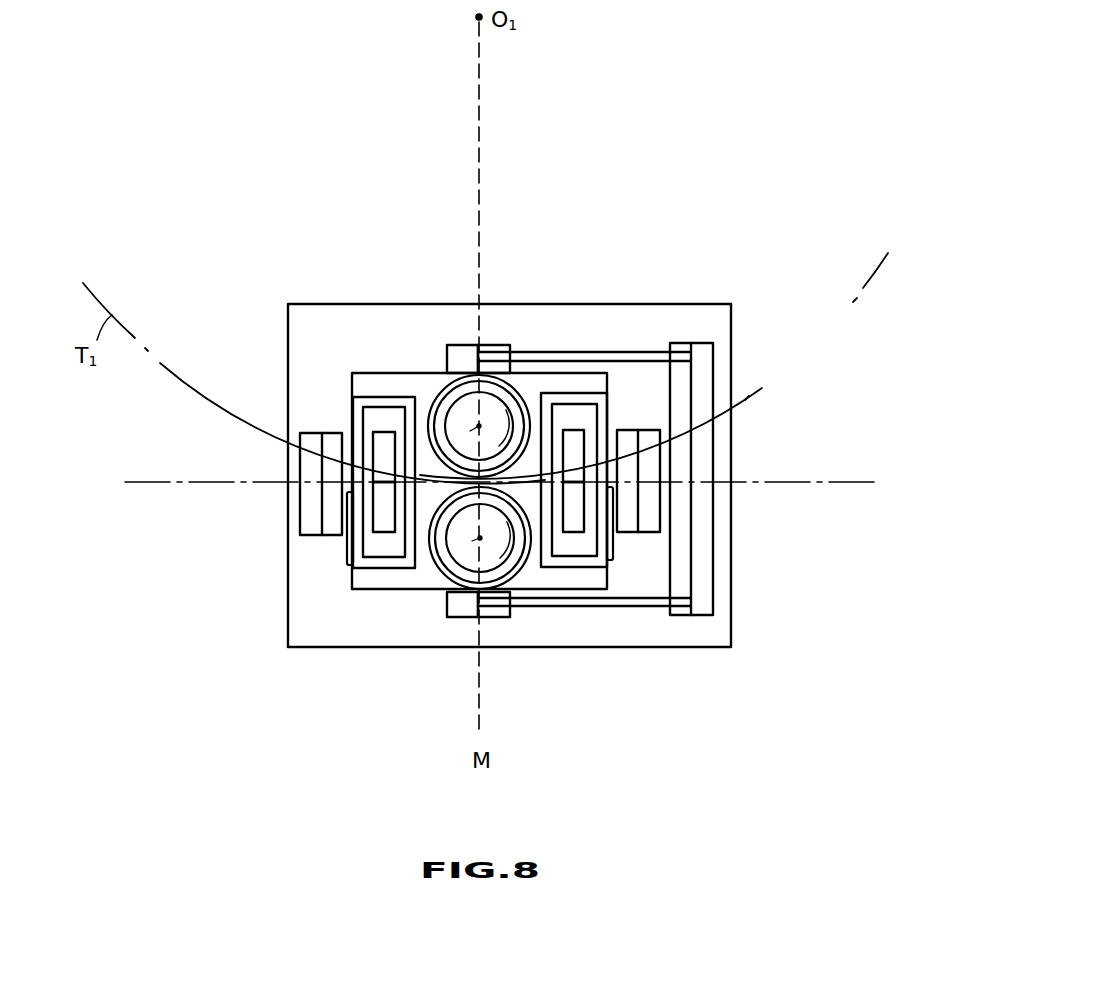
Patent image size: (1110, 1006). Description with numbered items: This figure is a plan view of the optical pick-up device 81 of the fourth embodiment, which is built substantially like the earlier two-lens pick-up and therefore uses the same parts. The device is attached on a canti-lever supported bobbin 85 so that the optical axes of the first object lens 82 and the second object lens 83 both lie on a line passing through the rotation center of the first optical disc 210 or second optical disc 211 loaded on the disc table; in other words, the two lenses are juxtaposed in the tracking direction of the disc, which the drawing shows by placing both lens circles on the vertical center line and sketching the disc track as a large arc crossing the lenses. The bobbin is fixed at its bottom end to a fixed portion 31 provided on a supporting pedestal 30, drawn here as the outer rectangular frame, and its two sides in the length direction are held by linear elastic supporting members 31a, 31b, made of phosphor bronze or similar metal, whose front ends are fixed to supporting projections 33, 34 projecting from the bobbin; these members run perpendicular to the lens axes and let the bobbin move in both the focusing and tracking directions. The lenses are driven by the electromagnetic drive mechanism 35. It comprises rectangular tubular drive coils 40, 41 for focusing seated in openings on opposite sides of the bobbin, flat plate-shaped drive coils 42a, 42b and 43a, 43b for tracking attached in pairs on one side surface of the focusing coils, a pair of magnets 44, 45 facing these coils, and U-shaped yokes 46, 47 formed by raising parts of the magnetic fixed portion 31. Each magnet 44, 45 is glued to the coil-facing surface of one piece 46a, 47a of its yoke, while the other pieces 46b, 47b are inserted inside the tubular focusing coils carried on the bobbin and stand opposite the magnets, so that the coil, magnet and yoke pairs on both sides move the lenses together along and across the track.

The supporting pedestal 30 is at (723, 635).
The fixed portion 31 is at (700, 567).
The elastic supporting member 31a is at (582, 355).
The elastic supporting member 31b is at (551, 606).
The supporting projection 33 is at (462, 357).
The supporting projection 34 is at (456, 617).
The electromagnetic drive mechanism 35 is at (306, 556).
The drive coil for focusing 40 is at (598, 418).
The drive coil for focusing 41 is at (355, 420).
The drive coil for tracking 42a is at (613, 433).
The drive coil for tracking 42b is at (610, 548).
The drive coil for tracking 43a is at (355, 395).
The drive coil for tracking 43b is at (345, 550).
The magnet 44 is at (625, 498).
The magnet 45 is at (330, 520).
The yoke 46 is at (652, 527).
The one piece of yoke 46a is at (650, 466).
The other piece of yoke 46b is at (573, 532).
The yoke 47 is at (347, 503).
The one piece of yoke 47a is at (382, 473).
The other piece of yoke 47b is at (380, 532).
The optical pick-up device 81 is at (790, 258).
The first object lens 82 is at (453, 398).
The second object lens 83 is at (465, 548).
The canti-lever supported bobbin 85 is at (400, 387).
The first optical disc 210 is at (850, 320).
The second optical disc 211 is at (870, 277).